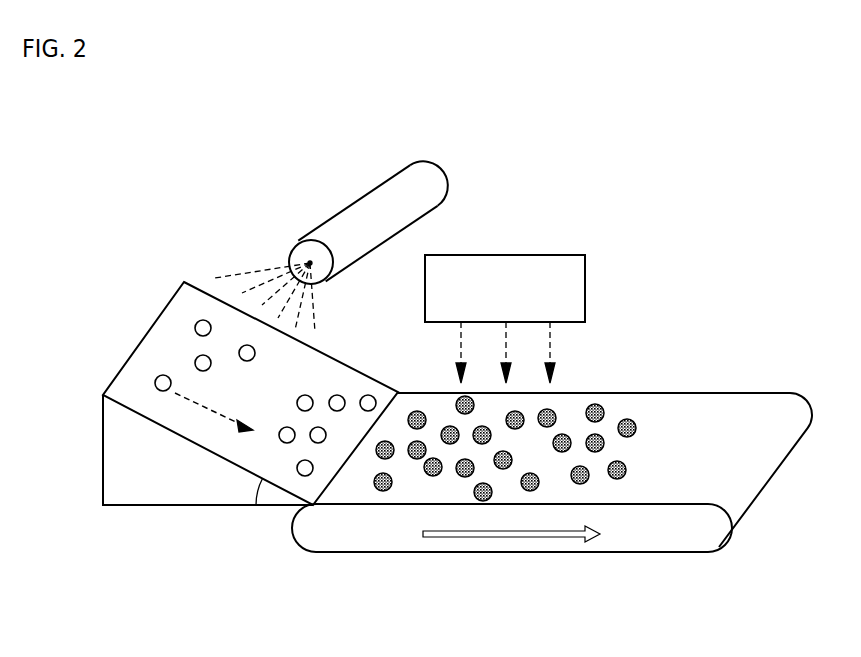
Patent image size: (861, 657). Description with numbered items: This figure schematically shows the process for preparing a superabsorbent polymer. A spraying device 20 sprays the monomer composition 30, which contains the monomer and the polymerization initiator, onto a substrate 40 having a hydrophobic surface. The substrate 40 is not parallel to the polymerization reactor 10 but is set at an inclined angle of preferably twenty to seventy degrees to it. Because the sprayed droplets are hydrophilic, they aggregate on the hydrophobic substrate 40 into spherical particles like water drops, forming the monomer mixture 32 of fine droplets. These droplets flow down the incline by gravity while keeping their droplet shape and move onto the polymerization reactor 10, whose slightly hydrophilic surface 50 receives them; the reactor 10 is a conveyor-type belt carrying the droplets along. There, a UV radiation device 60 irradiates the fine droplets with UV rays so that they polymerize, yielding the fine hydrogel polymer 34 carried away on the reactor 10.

The polymerization reactor 10 is at (698, 544).
The spraying device 20 is at (417, 186).
The monomer composition being sprayed 30 is at (290, 268).
The monomer mixture having fine droplet size 32 is at (297, 478).
The fine hydrogel polymer 34 is at (621, 483).
The substrate having a hydrophobic surface 40 is at (165, 413).
The slightly hydrophilic surface 50 is at (745, 407).
The UV radiation device 60 is at (585, 289).